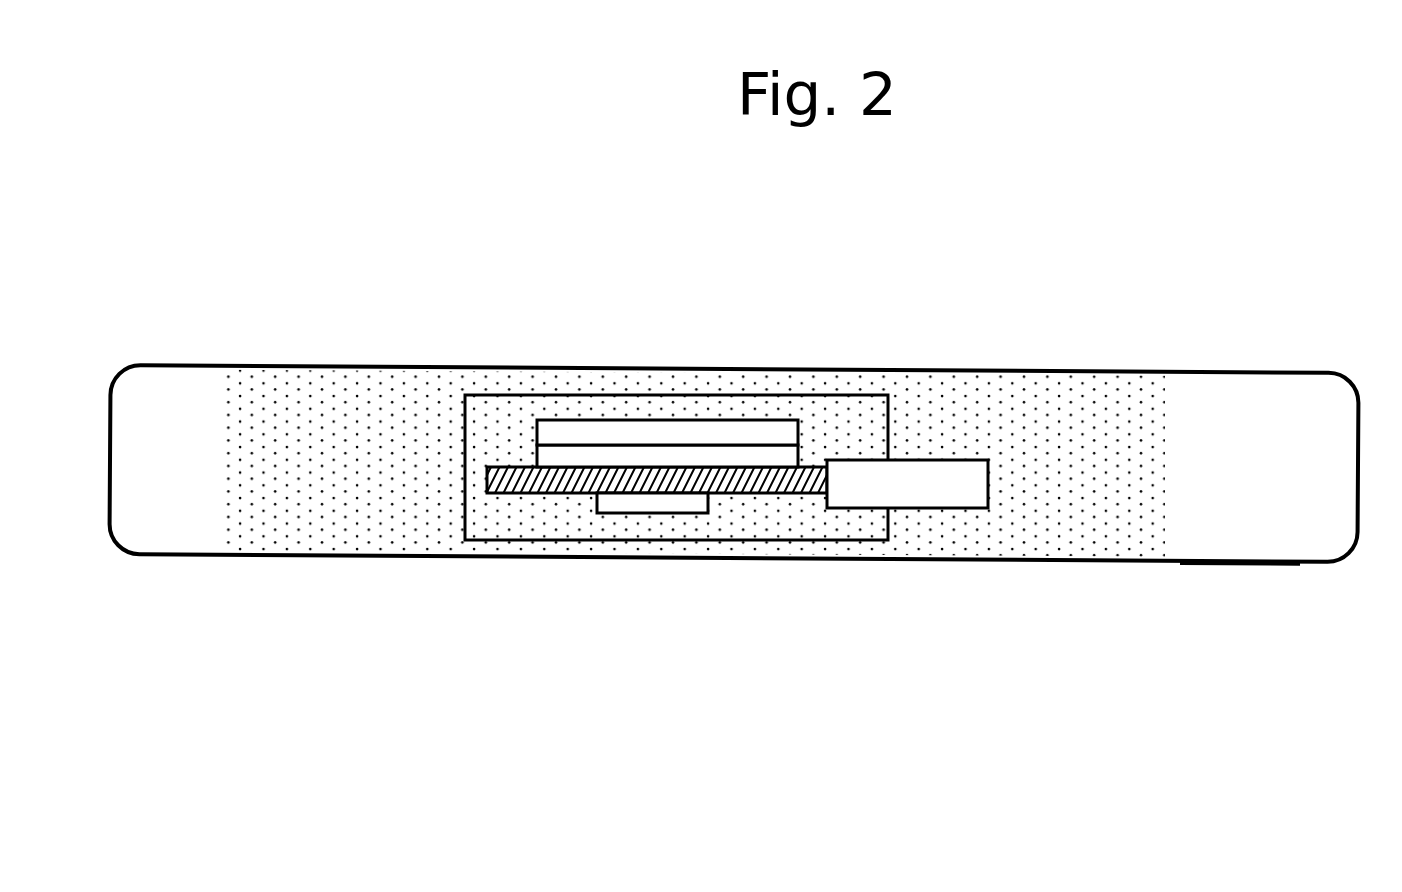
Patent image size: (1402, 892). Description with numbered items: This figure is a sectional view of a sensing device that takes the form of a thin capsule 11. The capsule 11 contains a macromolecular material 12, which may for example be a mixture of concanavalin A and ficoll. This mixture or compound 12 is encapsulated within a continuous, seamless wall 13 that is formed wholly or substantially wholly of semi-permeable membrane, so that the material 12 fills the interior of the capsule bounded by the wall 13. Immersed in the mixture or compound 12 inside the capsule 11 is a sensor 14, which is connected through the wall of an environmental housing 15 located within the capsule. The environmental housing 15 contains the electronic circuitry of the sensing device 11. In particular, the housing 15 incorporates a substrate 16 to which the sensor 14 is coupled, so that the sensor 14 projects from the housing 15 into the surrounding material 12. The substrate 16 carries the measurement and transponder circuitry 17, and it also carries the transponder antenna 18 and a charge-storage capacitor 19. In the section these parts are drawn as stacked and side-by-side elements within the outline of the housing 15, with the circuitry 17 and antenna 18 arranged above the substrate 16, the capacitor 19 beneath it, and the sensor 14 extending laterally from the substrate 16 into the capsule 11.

The capsule 11 is at (1188, 342).
The macromolecular material 12 is at (1140, 522).
The wall 13 is at (1225, 573).
The sensor 14 is at (941, 460).
The environmental housing 15 is at (458, 518).
The substrate 16 is at (768, 494).
The measurement and transponder circuitry 17 is at (543, 456).
The transponder antenna 18 is at (652, 430).
The charge-storage capacitor 19 is at (655, 508).